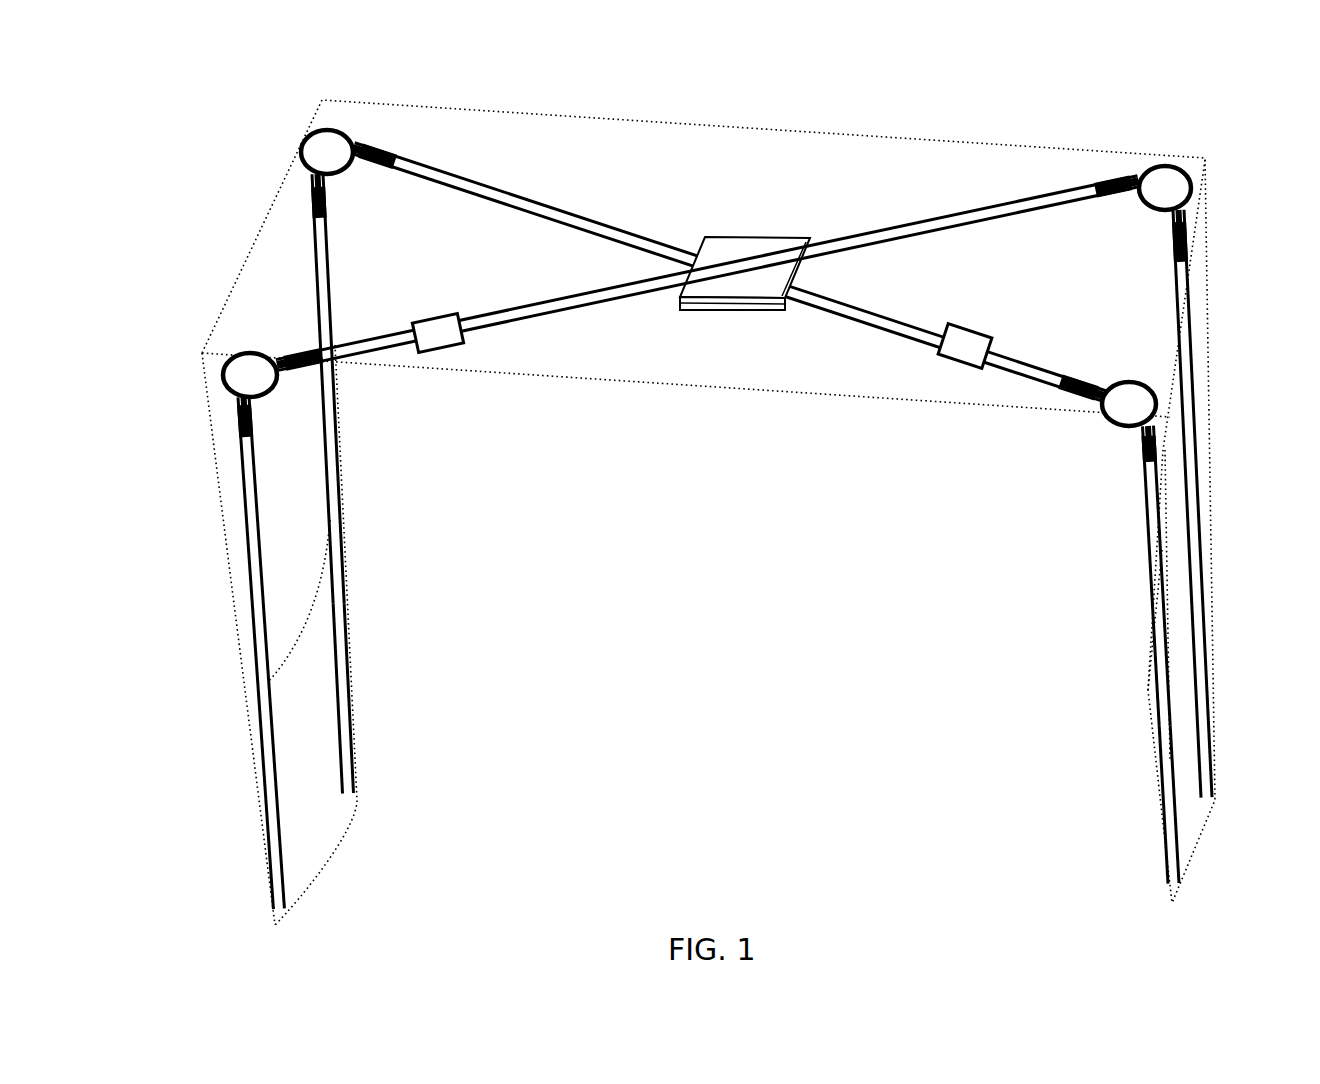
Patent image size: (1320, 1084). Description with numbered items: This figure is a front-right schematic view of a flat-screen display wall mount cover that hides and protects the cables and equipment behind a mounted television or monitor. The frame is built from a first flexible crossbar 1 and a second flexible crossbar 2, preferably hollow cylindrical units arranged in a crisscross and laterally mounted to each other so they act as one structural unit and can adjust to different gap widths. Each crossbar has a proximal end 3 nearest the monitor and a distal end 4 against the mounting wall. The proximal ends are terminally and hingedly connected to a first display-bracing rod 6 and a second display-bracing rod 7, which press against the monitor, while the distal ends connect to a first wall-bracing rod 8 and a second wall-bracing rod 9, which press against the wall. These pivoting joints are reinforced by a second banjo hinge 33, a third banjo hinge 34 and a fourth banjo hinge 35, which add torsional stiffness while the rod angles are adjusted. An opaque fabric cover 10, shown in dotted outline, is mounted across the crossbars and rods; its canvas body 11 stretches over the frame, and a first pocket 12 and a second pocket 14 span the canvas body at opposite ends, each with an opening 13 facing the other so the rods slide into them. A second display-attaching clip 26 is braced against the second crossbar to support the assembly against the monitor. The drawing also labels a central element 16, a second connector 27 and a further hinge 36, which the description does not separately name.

The first flexible crossbar 1 is at (918, 212).
The second flexible crossbar 2 is at (567, 200).
The proximal end 3 is at (363, 345).
The distal end 4 is at (415, 168).
The first display-bracing rod 6 is at (248, 550).
The second display-bracing rod 7 is at (1148, 490).
The first wall-bracing rod 8 is at (322, 238).
The second wall-bracing rod 9 is at (1177, 265).
The opaque fabric cover 10 is at (792, 117).
The canvas body 11 is at (754, 196).
The first pocket 12 is at (325, 733).
The opening 13 is at (277, 618).
The second pocket 14 is at (1157, 772).
The central hub plate 16 is at (745, 330).
The second display-attaching clip 26 is at (437, 327).
The bar connector 27 is at (965, 345).
The second banjo hinge 33 is at (235, 377).
The third banjo hinge 34 is at (1147, 405).
The fourth banjo hinge 35 is at (313, 150).
The corner joint 36 is at (1177, 188).